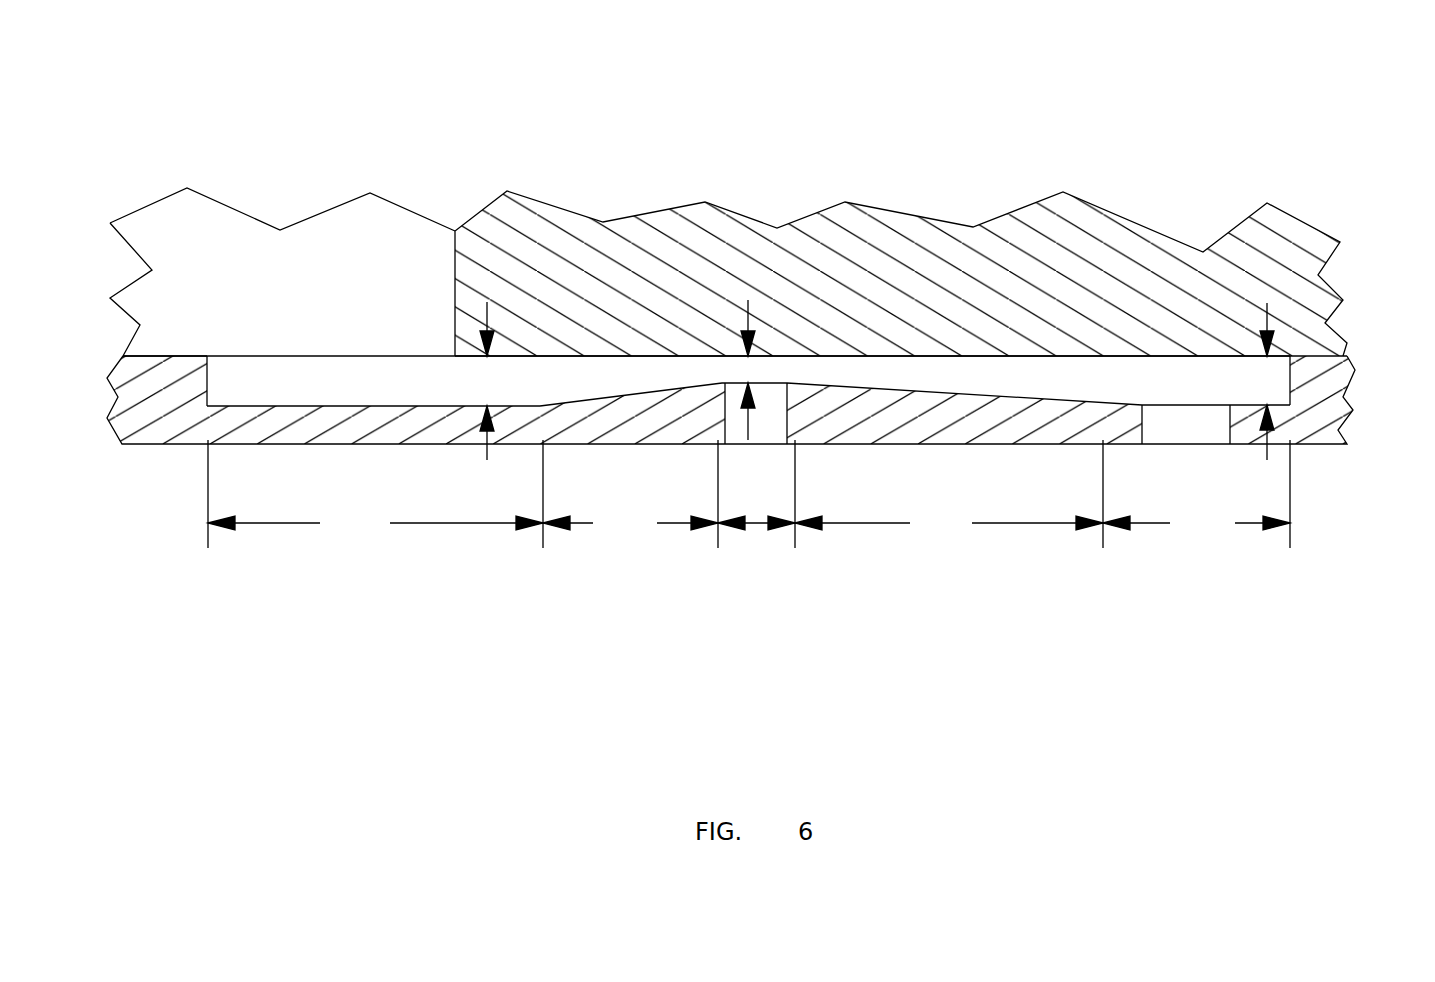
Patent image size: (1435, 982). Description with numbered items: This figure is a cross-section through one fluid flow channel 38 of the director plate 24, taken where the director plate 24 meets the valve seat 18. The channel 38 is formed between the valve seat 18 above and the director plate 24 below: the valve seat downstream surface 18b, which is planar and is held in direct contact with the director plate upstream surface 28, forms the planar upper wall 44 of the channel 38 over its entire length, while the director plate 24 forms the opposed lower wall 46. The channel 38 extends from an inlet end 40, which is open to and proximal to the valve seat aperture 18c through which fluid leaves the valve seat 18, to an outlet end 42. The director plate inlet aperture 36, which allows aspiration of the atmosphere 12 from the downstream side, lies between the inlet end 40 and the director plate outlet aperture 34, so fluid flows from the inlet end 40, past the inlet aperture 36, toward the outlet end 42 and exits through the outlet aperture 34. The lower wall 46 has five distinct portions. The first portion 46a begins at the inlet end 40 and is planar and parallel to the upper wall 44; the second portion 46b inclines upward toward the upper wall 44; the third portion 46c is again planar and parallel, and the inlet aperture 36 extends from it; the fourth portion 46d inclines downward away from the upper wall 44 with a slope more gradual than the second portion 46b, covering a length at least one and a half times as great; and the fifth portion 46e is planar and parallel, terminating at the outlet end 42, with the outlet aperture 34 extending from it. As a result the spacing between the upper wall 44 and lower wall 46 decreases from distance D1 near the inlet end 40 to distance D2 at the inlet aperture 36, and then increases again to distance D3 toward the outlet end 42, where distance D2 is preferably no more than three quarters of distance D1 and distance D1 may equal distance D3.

The atmosphere 12 is at (704, 493).
The valve seat 18 is at (859, 225).
The valve seat downstream surface 18b is at (630, 356).
The valve seat aperture 18c is at (383, 262).
The director plate 24 is at (155, 446).
The director plate upstream surface 28 is at (188, 356).
The director plate outlet aperture 34 is at (1163, 420).
The director plate inlet aperture 36 is at (777, 405).
The fluid flow channel 38 is at (300, 372).
The inlet end 40 is at (207, 381).
The outlet end 42 is at (1290, 372).
The upper wall 44 is at (735, 226).
The lower wall 46 is at (1007, 374).
The first portion 46a is at (375, 494).
The second portion 46b is at (630, 494).
The third portion 46c is at (757, 527).
The fourth portion 46d is at (949, 494).
The fifth portion 46e is at (1196, 494).
The distance D1 is at (487, 303).
The distance D2 is at (748, 300).
The distance D3 is at (1267, 303).